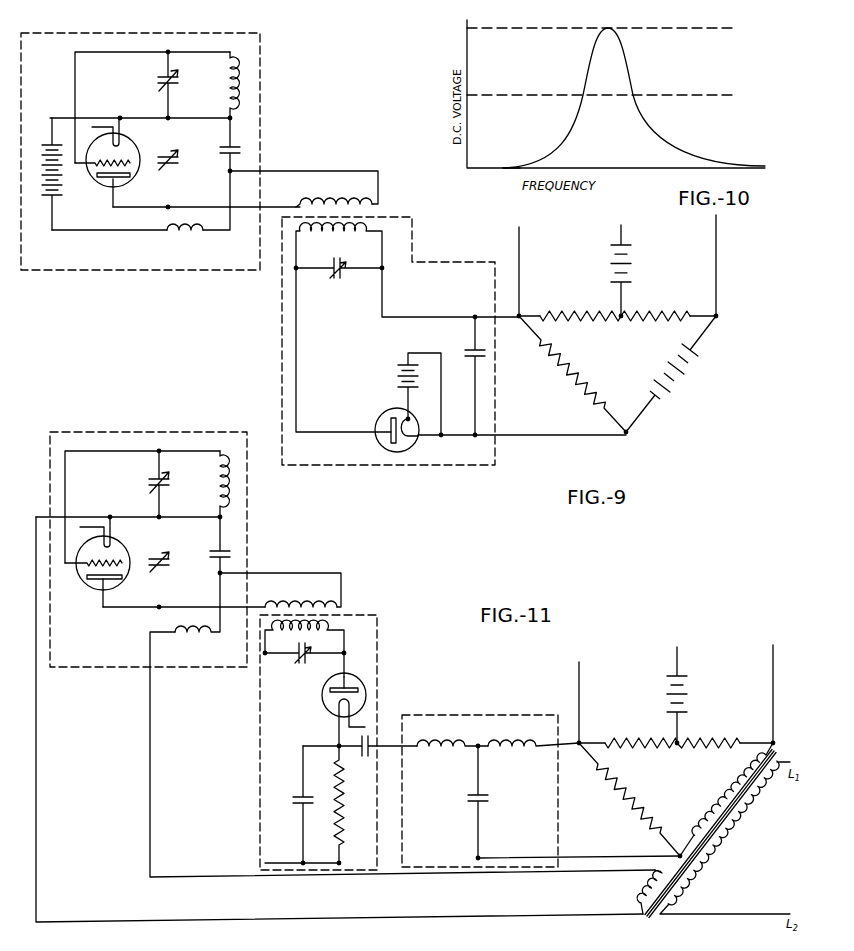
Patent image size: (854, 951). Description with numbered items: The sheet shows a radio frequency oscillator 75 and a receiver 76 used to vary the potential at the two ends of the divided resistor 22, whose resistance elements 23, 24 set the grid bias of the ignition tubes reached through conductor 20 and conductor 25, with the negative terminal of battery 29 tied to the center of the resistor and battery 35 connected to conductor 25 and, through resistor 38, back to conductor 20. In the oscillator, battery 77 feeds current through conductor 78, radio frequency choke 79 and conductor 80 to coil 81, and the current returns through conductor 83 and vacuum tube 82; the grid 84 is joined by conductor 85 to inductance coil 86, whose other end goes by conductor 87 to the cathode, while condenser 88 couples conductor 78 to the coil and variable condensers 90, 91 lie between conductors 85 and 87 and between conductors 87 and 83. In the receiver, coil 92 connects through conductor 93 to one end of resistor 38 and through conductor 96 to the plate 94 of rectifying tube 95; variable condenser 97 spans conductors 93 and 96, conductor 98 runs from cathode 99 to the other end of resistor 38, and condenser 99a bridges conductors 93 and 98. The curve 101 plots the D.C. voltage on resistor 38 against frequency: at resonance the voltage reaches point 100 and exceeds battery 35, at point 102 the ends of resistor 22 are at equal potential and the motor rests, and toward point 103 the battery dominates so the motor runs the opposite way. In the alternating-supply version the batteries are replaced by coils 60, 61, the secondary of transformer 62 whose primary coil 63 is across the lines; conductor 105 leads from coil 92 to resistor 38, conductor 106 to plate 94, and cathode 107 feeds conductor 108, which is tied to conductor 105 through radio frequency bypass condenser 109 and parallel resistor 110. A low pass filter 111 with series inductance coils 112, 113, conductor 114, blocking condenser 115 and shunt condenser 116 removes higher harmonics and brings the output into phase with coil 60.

In FIG. 9, the conductor 20 is at (519, 265).
In FIG. 11, the conductor 20 is at (579, 680).
In FIG. 9, the divided resistor 22 is at (615, 308).
In FIG. 11, the divided resistor 22 is at (672, 734).
In FIG. 9, the resistance element 23 is at (572, 316).
In FIG. 11, the resistance element 23 is at (627, 743).
In FIG. 9, the resistance element 24 is at (670, 316).
In FIG. 11, the resistance element 24 is at (715, 743).
In FIG. 9, the conductor 25 is at (716, 260).
In FIG. 11, the conductor 25 is at (773, 658).
In FIG. 9, the battery 29 is at (630, 250).
In FIG. 11, the battery 29 is at (681, 672).
In FIG. 9, the battery 35 is at (676, 388).
In FIG. 9, the resistor 38 is at (575, 383).
In FIG. 11, the resistor 38 is at (620, 790).
In FIG. 11, the coil 60 is at (714, 812).
In FIG. 11, the coil 61 is at (648, 889).
In FIG. 11, the transformer 62 is at (647, 919).
In FIG. 11, the primary coil 63 is at (726, 848).
In FIG. 9, the radio frequency oscillator 75 is at (88, 270).
In FIG. 11, the radio frequency oscillator 75 is at (98, 667).
In FIG. 9, the receiver 76 is at (282, 333).
In FIG. 9, the battery 77 is at (48, 200).
In FIG. 9, the conductor 78 is at (114, 230).
In FIG. 11, the conductor 78 is at (150, 645).
In FIG. 9, the radio frequency choke 79 is at (182, 232).
In FIG. 11, the radio frequency choke 79 is at (200, 640).
In FIG. 9, the conductor 80 is at (330, 171).
In FIG. 11, the conductor 80 is at (323, 573).
In FIG. 9, the coil 81 is at (338, 200).
In FIG. 11, the coil 81 is at (307, 601).
In FIG. 9, the vacuum tube 82 is at (100, 185).
In FIG. 11, the vacuum tube 82 is at (87, 590).
In FIG. 9, the conductor 83 is at (200, 207).
In FIG. 11, the conductor 83 is at (190, 607).
In FIG. 9, the grid 84 is at (130, 173).
In FIG. 11, the grid 84 is at (122, 572).
In FIG. 9, the conductor 85 is at (75, 57).
In FIG. 11, the conductor 85 is at (65, 451).
In FIG. 9, the inductance coil 86 is at (238, 78).
In FIG. 11, the inductance coil 86 is at (228, 486).
In FIG. 9, the conductor 87 is at (198, 118).
In FIG. 11, the conductor 87 is at (190, 517).
In FIG. 9, the condenser 88 is at (240, 148).
In FIG. 11, the condenser 88 is at (232, 553).
In FIG. 9, the variable condenser 90 is at (158, 79).
In FIG. 11, the variable condenser 90 is at (149, 482).
In FIG. 9, the variable condenser 91 is at (186, 160).
In FIG. 11, the variable condenser 91 is at (172, 562).
In FIG. 9, the coil 92 is at (314, 236).
In FIG. 11, the coil 92 is at (338, 624).
In FIG. 9, the conductor 93 is at (420, 317).
In FIG. 9, the plate 94 is at (381, 412).
In FIG. 11, the plate 94 is at (360, 681).
In FIG. 9, the rectifying tube 95 is at (392, 452).
In FIG. 11, the rectifying tube 95 is at (366, 700).
In FIG. 9, the conductor 96 is at (298, 366).
In FIG. 9, the variable condenser 97 is at (337, 280).
In FIG. 11, the variable condenser 97 is at (302, 666).
In FIG. 9, the conductor 98 is at (456, 435).
In FIG. 9, the cathode 99 is at (412, 445).
In FIG. 9, the condenser 99a is at (470, 347).
In FIG. 10, the point 100 is at (606, 28).
In FIG. 10, the curve 101 is at (633, 76).
In FIG. 10, the voltage point 102 is at (583, 92).
In FIG. 10, the point 103 is at (505, 166).
In FIG. 11, the conductor 105 is at (262, 795).
In FIG. 11, the conductor 106 is at (352, 662).
In FIG. 11, the cathode 107 is at (332, 708).
In FIG. 11, the conductor 108 is at (300, 758).
In FIG. 11, the condenser 109 is at (294, 804).
In FIG. 11, the resistor 110 is at (345, 815).
In FIG. 11, the low pass filter 111 is at (493, 715).
In FIG. 11, the inductance coil 112 is at (440, 751).
In FIG. 11, the inductance coil 113 is at (512, 751).
In FIG. 11, the conductor 114 is at (393, 748).
In FIG. 11, the condenser 115 is at (372, 741).
In FIG. 11, the condenser 116 is at (488, 804).